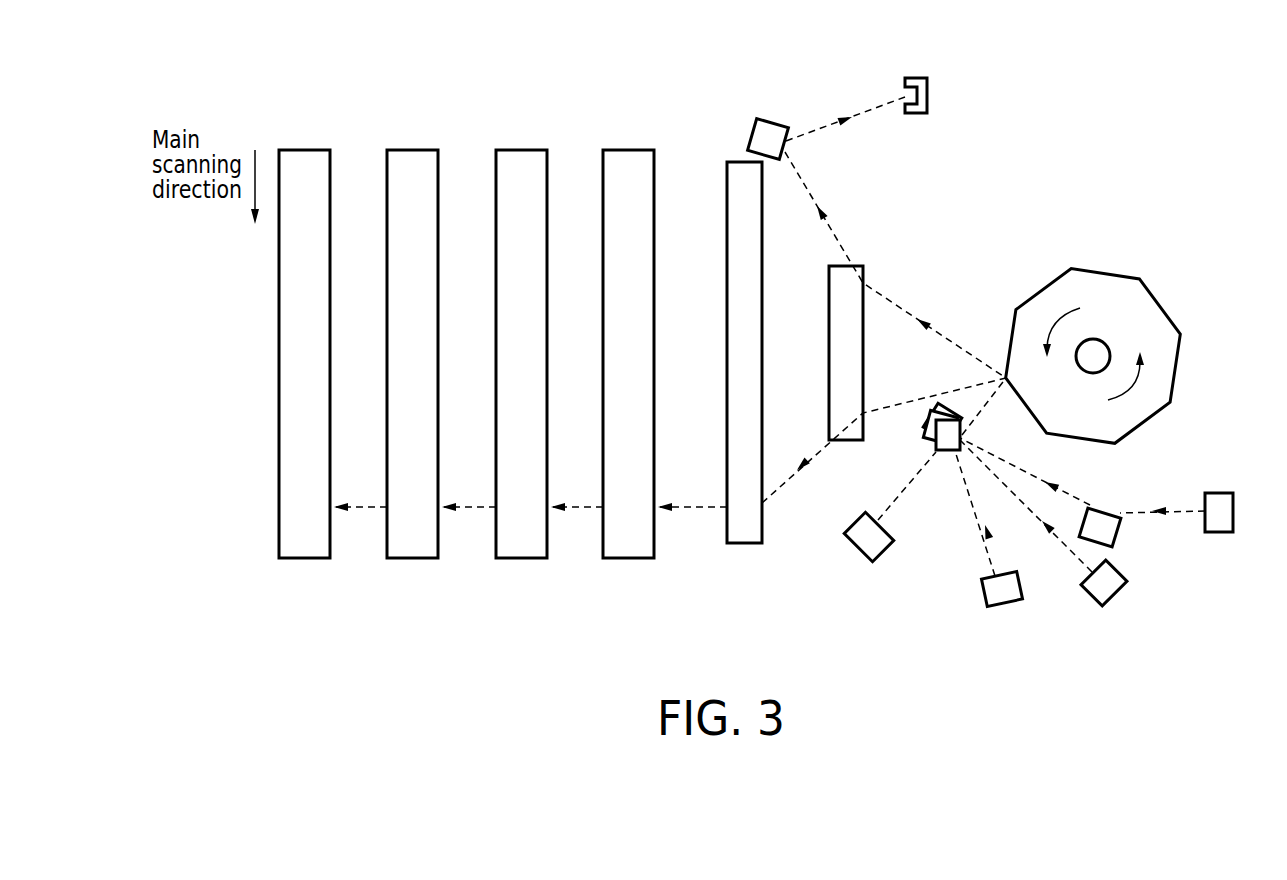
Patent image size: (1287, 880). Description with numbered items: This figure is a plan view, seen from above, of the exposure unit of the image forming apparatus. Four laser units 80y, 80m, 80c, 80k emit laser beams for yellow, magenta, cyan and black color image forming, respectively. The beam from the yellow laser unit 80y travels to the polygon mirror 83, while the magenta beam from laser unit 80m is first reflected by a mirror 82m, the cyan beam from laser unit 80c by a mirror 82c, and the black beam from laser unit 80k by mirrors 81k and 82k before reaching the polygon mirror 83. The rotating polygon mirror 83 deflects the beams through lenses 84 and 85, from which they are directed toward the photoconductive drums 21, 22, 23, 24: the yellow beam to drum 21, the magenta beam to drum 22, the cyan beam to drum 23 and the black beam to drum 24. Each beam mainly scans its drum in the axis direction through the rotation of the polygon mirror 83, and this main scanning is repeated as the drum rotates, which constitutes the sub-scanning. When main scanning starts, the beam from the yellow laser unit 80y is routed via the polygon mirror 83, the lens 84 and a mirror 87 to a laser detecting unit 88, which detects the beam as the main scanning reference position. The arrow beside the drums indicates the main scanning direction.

The photoconductive drum 21 is at (306, 150).
The photoconductive drum 22 is at (414, 150).
The photoconductive drum 23 is at (524, 150).
The photoconductive drum 24 is at (630, 150).
The laser unit 80y is at (862, 557).
The laser unit 80m is at (1006, 608).
The laser unit 80c is at (1100, 602).
The laser unit 80k is at (1222, 493).
The mirror 81k is at (1118, 530).
The mirror 82k is at (924, 420).
The mirror 82c is at (935, 438).
The mirror 82m is at (935, 445).
The polygon mirror 83 is at (1098, 269).
The lens 84 is at (829, 278).
The lens 85 is at (748, 543).
The mirror 87 is at (772, 119).
The laser detecting unit 88 is at (917, 78).